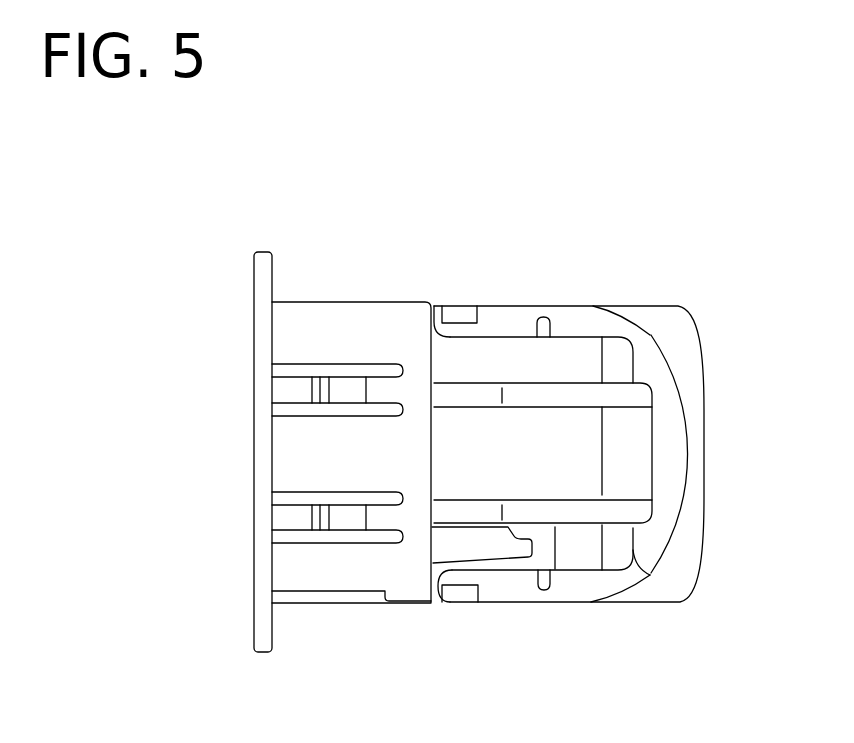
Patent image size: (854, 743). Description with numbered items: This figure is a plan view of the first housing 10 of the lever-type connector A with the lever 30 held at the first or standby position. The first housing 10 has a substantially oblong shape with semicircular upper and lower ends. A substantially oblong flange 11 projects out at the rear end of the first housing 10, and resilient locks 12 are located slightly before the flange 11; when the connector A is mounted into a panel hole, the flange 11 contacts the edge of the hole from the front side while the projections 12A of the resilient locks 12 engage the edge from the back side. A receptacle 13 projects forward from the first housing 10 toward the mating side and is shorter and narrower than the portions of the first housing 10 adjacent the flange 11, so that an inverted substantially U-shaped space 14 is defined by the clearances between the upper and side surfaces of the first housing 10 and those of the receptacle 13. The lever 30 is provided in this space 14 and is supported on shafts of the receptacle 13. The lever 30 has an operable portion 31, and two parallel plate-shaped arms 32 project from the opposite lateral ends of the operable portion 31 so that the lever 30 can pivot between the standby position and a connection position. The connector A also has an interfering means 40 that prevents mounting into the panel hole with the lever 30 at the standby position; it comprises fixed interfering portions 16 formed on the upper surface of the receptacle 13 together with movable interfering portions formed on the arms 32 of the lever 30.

The first housing 10 is at (353, 315).
The flange 11 is at (262, 262).
The resilient locks 12 is at (288, 390).
The projections 12A is at (317, 393).
The receptacle 13 is at (518, 352).
The space 14 is at (439, 312).
The fixed interfering portions 16 is at (552, 397).
The interfering means 40 is at (567, 686).
The lever 30 is at (688, 273).
The operable portion 31 is at (693, 377).
The arms 32 is at (567, 318).
The lever-type connector A is at (657, 226).